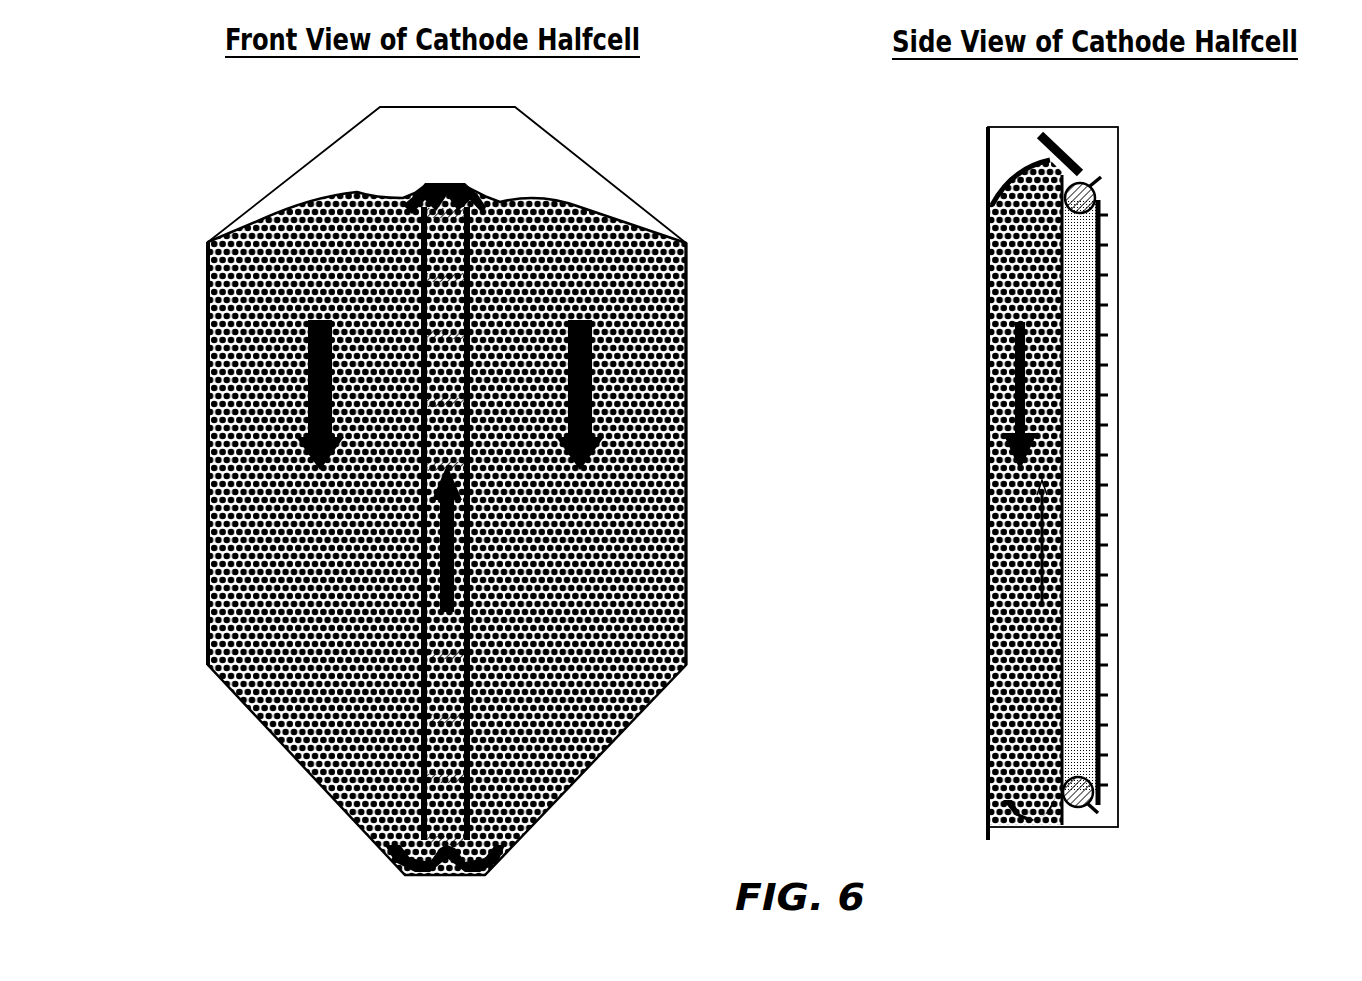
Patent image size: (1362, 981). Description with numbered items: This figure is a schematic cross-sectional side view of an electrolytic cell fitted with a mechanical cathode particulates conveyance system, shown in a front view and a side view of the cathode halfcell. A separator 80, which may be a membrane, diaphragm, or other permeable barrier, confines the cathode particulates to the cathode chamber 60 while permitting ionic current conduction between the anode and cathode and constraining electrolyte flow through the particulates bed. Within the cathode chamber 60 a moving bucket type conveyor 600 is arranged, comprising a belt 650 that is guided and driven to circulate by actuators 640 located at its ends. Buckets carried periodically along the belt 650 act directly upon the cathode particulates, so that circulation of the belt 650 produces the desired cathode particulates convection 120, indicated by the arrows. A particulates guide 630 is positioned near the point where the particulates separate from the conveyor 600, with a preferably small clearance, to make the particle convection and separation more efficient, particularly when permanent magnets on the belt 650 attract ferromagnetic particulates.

The cathode chamber 60 is at (502, 162).
The separator 80 is at (990, 730).
The cathode particulates convection 120 is at (466, 555).
The conveyor 600 is at (420, 690).
The particulates guide 630 is at (1086, 157).
The actuator 640 is at (1096, 200).
The belt 650 is at (1130, 470).